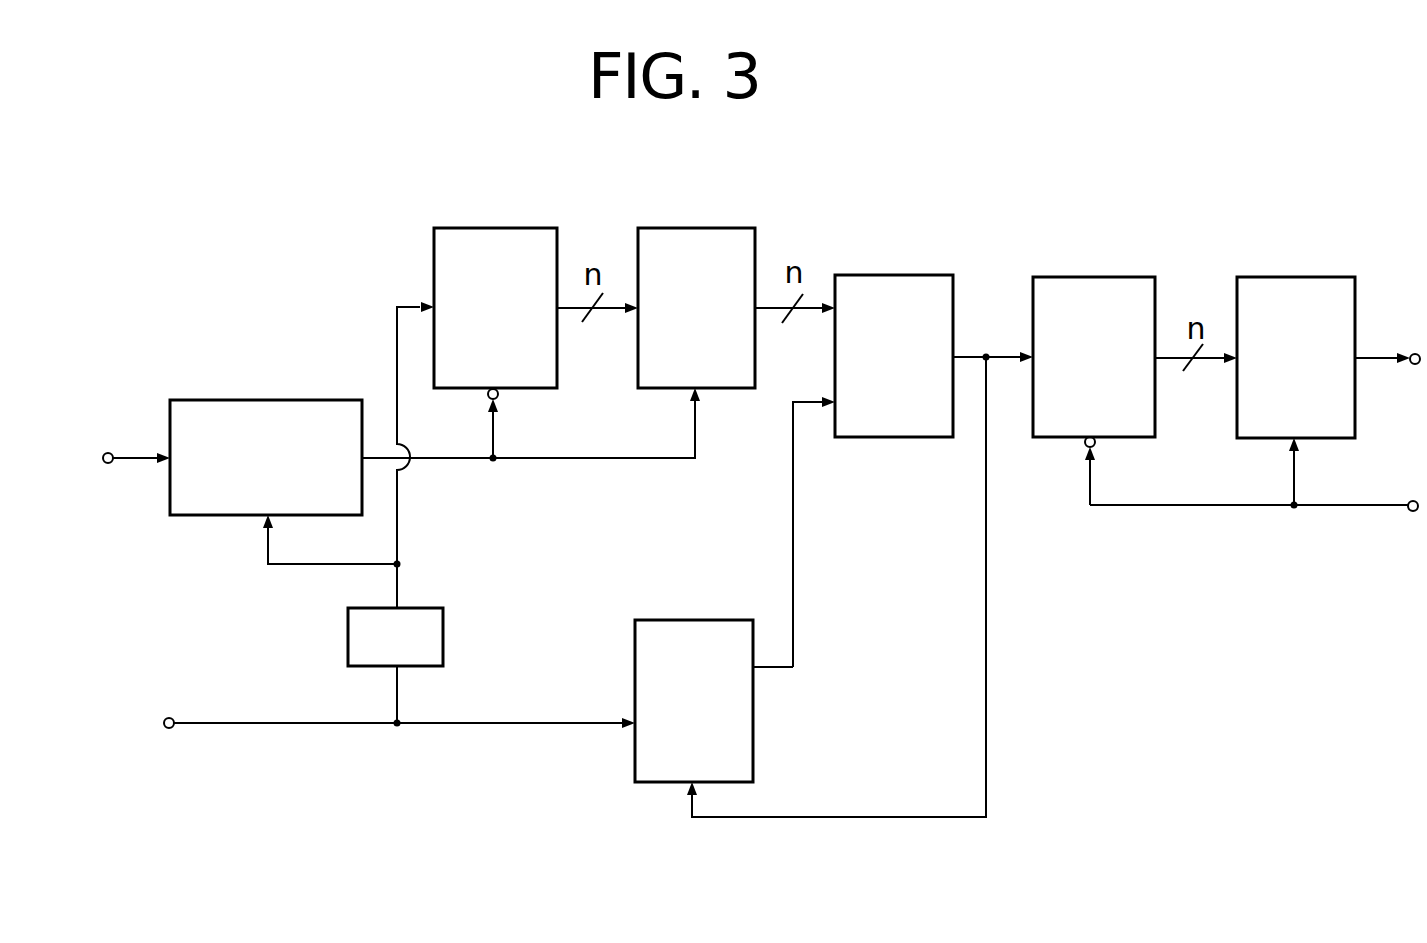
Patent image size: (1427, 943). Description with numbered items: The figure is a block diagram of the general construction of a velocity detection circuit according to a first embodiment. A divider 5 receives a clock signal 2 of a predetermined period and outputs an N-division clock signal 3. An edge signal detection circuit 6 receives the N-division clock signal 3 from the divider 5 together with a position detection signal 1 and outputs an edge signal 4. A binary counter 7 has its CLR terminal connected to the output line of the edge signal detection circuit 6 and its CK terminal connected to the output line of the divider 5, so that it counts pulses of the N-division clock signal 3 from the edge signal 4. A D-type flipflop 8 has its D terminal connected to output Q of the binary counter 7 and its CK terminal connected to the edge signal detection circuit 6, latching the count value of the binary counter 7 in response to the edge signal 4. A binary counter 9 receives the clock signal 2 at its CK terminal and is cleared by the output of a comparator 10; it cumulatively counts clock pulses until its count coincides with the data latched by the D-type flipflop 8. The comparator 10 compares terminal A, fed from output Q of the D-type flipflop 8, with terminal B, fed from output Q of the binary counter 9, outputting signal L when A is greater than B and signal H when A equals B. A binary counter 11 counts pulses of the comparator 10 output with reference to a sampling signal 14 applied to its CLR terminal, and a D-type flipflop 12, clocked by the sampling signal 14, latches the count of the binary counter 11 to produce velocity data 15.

The position detection signal 1 is at (107, 452).
The clock signal 2 is at (169, 717).
The N-division clock signal 3 is at (397, 530).
The edge signal 4 is at (592, 460).
The divider 5 is at (443, 640).
The edge signal detection circuit 6 is at (283, 400).
The binary counter 7 is at (517, 228).
The D-type flipflop 8 is at (678, 228).
The binary counter 9 is at (693, 620).
The comparator 10 is at (888, 275).
The binary counter 11 is at (1085, 277).
The D-type flipflop 12 is at (1292, 277).
The sampling signal 14 is at (1411, 512).
The velocity data 15 is at (1415, 353).